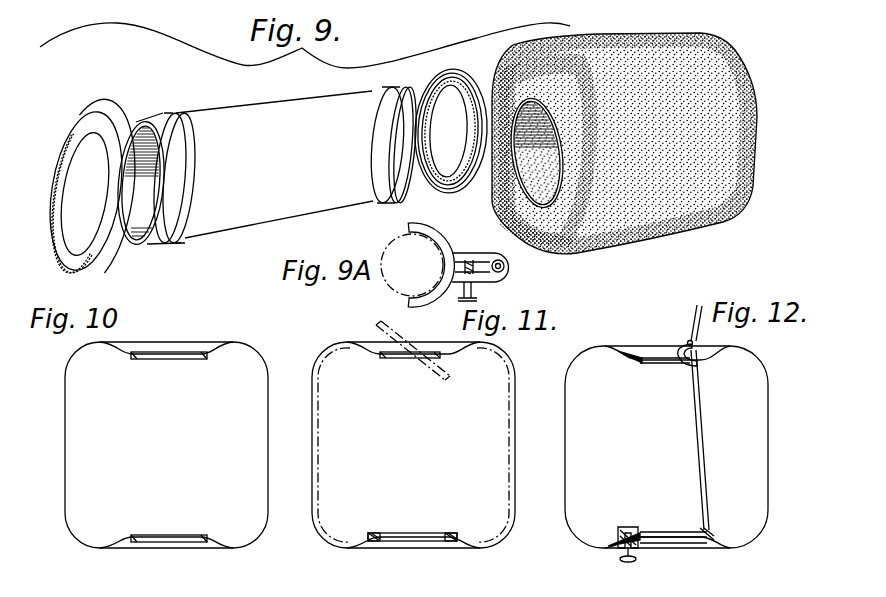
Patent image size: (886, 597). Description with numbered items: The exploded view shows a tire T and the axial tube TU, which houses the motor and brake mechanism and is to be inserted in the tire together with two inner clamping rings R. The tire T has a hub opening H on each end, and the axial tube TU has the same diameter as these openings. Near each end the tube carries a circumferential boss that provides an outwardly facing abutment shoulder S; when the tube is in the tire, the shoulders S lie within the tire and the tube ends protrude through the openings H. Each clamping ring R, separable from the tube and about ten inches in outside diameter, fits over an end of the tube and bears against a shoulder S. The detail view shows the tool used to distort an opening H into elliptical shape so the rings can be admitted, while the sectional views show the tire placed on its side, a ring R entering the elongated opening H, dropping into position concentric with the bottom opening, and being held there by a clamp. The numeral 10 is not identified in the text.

In FIG. 9, the tube assembly 10 is at (262, 104).
In FIG. 9, the clamping ring R is at (64, 242).
In FIG. 9A, the clamping ring R is at (400, 311).
In FIG. 11, the clamping ring R is at (398, 334).
In FIG. 12, the clamping ring R is at (710, 534).
In FIG. 9, the abutment shoulder S is at (184, 165).
In FIG. 9, the axial tube TU is at (240, 218).
In FIG. 9, the hub opening H is at (516, 192).
In FIG. 9A, the hub opening H is at (390, 278).
In FIG. 10, the hub opening H is at (143, 351).
In FIG. 9, the tire T is at (706, 220).
In FIG. 10, the tire T is at (65, 410).
In FIG. 11, the tire T is at (312, 415).
In FIG. 12, the tire T is at (566, 428).